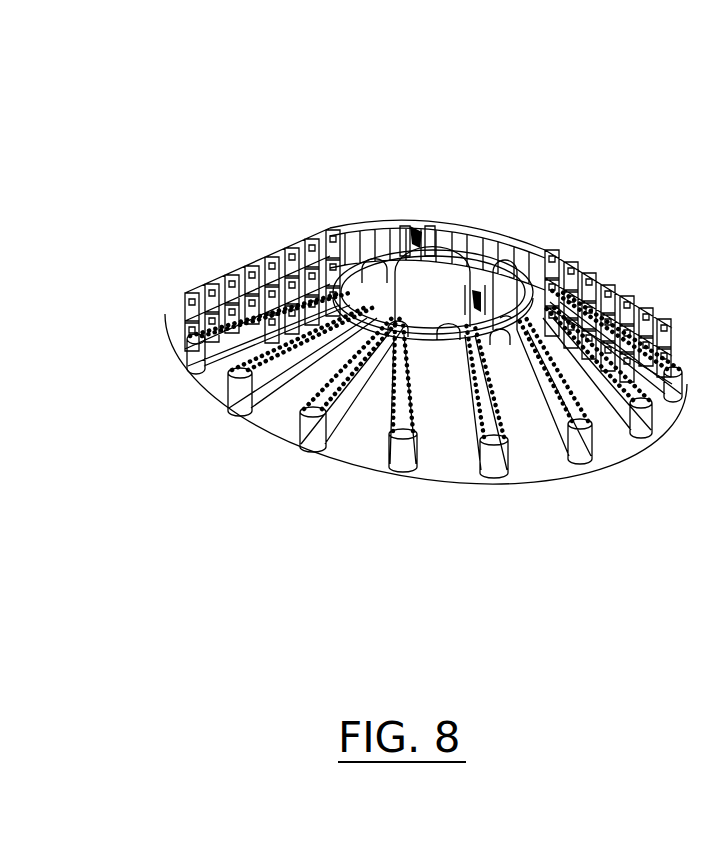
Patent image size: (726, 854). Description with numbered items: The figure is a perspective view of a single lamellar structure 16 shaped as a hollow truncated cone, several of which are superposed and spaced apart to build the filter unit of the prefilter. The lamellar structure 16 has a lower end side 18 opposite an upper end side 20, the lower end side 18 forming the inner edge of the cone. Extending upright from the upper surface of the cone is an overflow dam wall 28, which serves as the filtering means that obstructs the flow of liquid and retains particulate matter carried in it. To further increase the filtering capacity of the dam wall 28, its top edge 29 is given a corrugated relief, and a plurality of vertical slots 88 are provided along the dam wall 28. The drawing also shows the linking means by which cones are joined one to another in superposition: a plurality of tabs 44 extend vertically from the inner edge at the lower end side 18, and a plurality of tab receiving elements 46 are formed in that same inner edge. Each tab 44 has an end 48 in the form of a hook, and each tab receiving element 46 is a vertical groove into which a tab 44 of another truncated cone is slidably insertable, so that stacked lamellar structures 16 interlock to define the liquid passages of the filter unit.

The lamellar structure 16 is at (255, 148).
The lower end side 18 is at (350, 472).
The upper end side 20 is at (440, 228).
The overflow dam wall 28 is at (238, 405).
The top edge 29 is at (458, 432).
The tab 44 is at (482, 300).
The tab receiving element 46 is at (415, 238).
The end 48 is at (562, 250).
The vertical slot 88 is at (560, 450).